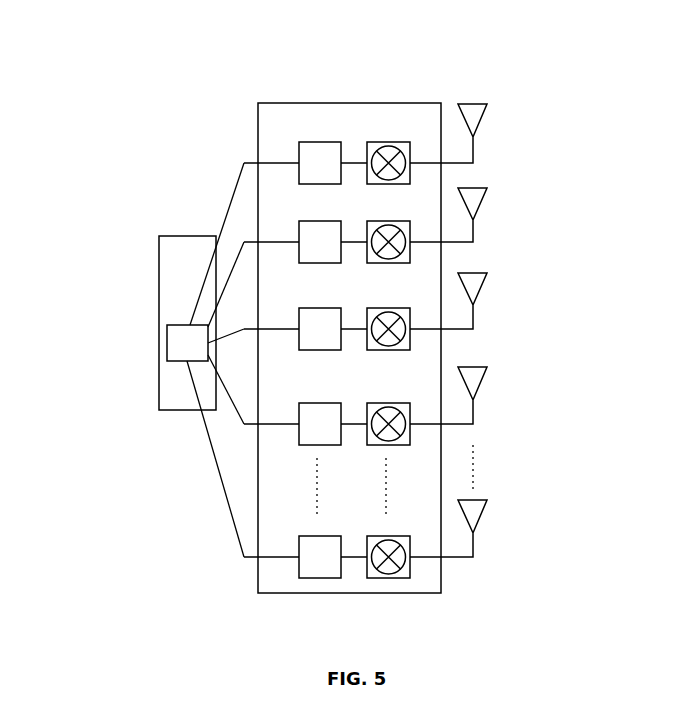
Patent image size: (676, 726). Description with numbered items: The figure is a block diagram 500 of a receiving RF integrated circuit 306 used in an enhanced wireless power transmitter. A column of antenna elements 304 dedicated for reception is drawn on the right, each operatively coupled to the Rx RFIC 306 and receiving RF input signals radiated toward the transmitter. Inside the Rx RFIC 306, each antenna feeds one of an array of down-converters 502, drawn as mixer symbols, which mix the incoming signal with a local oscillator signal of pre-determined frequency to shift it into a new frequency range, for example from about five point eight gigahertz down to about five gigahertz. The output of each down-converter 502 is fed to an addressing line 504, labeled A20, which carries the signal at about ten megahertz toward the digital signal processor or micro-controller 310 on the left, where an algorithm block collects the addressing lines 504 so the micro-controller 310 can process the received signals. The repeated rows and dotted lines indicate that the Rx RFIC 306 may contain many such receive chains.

The block diagram 500 is at (117, 173).
The digital signal processor or micro-controller 310 is at (159, 317).
The receiving RF integrated circuit 306 is at (383, 103).
The antenna elements 304 is at (483, 210).
The down-converters 502 is at (395, 443).
The addressing lines 504 is at (299, 432).